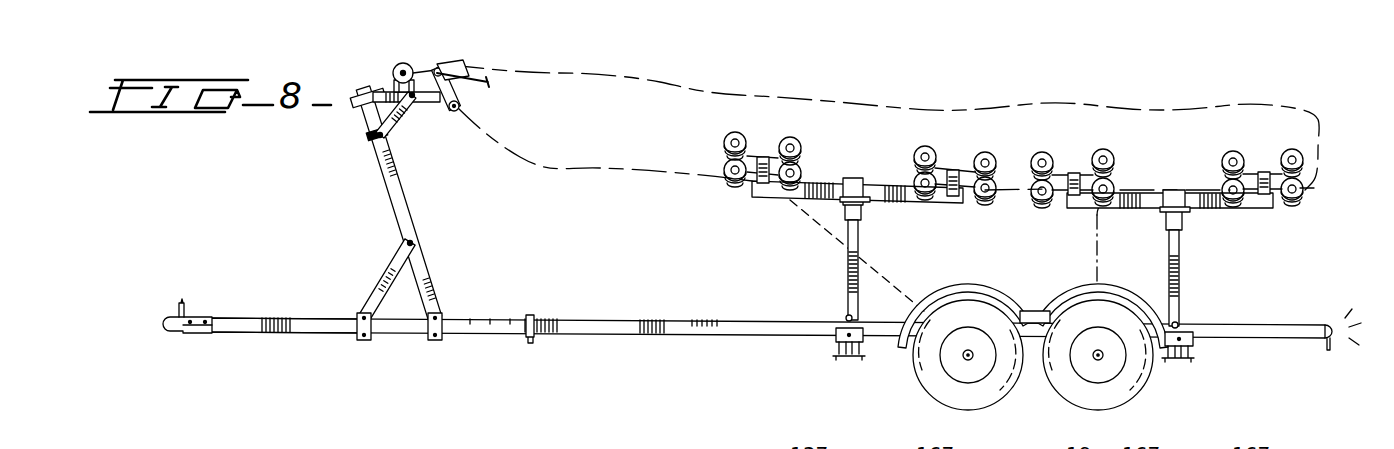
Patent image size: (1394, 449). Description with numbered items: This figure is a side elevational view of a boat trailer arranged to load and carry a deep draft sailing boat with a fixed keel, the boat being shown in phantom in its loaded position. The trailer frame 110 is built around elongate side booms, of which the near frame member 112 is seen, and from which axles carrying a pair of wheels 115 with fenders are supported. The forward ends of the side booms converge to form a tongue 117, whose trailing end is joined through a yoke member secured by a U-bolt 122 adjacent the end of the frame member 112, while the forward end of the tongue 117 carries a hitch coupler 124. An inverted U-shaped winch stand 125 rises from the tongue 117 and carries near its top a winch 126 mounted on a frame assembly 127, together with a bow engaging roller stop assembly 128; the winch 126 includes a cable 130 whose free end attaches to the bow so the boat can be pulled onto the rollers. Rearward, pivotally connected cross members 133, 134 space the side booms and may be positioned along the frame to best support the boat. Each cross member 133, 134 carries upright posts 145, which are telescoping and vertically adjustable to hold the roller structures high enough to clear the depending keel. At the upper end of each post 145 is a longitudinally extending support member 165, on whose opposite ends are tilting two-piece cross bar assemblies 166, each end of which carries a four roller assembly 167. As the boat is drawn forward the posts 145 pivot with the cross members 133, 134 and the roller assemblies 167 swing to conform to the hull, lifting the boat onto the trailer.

The trailer frame 110 is at (607, 333).
The side boom or frame member 112 is at (658, 334).
The wheel 115 is at (1052, 390).
The tongue 117 is at (325, 333).
The U-bolt 122 is at (530, 318).
The hitch coupler 124 is at (192, 316).
The winch stand 125 is at (391, 201).
The winch 126 is at (395, 72).
The frame assembly 127 is at (404, 120).
The bow engaging roller stop assembly 128 is at (448, 118).
The cable 130 is at (458, 68).
The cross member 133 is at (847, 358).
The cross member 134 is at (1185, 355).
The upright post 145 is at (845, 318).
The support member 165 is at (835, 188).
The two-piece cross bar assembly 166 is at (753, 165).
The roller assembly 167 is at (802, 142).